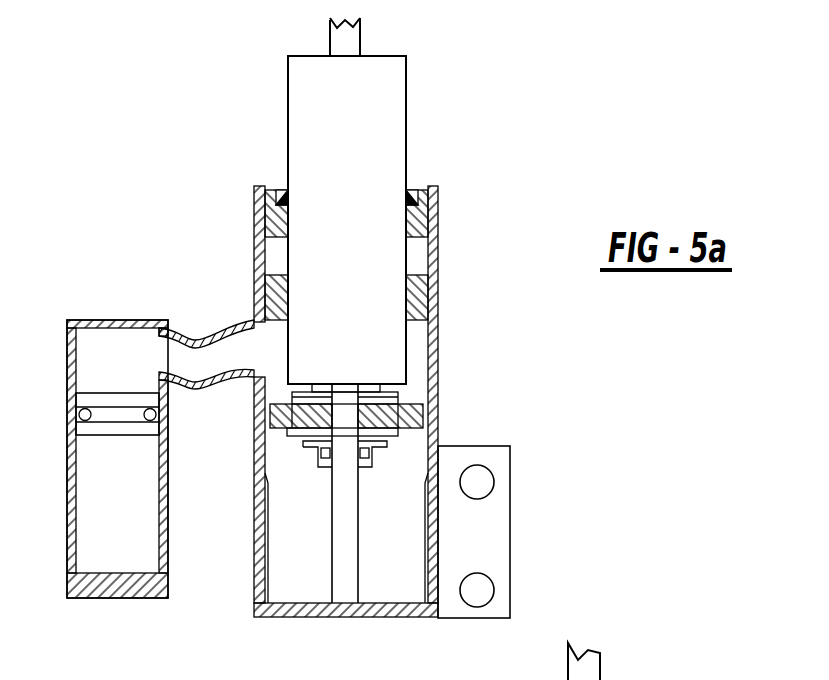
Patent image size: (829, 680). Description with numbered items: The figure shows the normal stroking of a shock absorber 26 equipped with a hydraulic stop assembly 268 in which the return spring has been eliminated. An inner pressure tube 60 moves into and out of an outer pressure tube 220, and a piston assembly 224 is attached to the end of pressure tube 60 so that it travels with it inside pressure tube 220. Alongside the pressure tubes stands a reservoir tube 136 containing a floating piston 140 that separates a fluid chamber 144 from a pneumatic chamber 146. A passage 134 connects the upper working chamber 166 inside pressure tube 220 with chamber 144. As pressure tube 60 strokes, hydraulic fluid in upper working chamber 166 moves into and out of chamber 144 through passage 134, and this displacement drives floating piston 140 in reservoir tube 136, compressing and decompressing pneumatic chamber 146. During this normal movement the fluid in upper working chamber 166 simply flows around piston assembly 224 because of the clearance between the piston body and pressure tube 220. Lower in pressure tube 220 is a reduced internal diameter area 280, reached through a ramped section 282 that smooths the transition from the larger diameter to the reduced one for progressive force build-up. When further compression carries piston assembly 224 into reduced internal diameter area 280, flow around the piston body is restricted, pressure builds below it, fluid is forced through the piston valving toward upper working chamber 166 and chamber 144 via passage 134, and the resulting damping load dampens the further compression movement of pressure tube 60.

The shock absorber 26 is at (480, 97).
The pressure tube 60 is at (351, 309).
The passage 134 is at (220, 348).
The reservoir tube 136 is at (67, 575).
The floating piston 140 is at (120, 433).
The chamber 144 is at (113, 345).
The pneumatic chamber 146 is at (98, 535).
The upper working chamber 166 is at (413, 377).
The pressure tube 220 is at (436, 350).
The piston assembly 224 is at (420, 418).
The hydraulic stop assembly 268 is at (455, 405).
The reduced internal diameter area 280 is at (300, 550).
The ramped section 282 is at (424, 466).